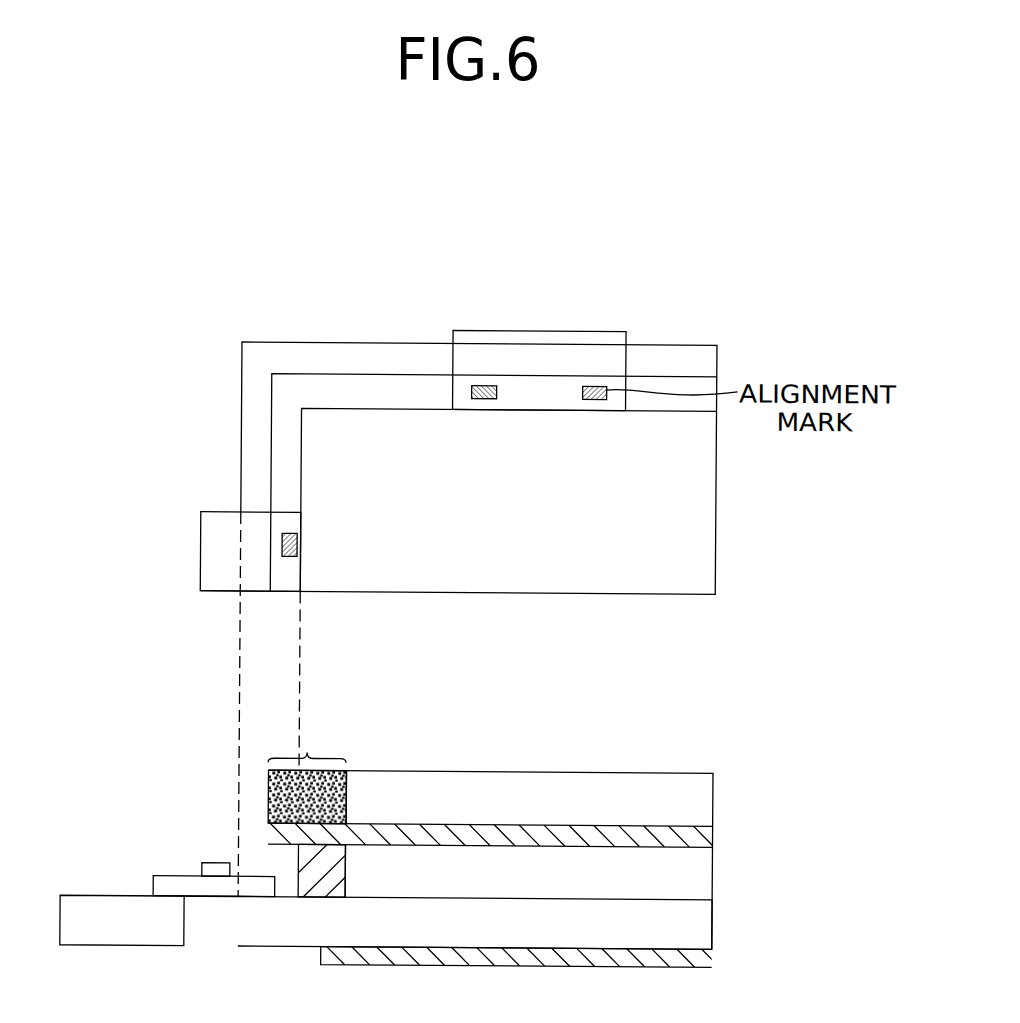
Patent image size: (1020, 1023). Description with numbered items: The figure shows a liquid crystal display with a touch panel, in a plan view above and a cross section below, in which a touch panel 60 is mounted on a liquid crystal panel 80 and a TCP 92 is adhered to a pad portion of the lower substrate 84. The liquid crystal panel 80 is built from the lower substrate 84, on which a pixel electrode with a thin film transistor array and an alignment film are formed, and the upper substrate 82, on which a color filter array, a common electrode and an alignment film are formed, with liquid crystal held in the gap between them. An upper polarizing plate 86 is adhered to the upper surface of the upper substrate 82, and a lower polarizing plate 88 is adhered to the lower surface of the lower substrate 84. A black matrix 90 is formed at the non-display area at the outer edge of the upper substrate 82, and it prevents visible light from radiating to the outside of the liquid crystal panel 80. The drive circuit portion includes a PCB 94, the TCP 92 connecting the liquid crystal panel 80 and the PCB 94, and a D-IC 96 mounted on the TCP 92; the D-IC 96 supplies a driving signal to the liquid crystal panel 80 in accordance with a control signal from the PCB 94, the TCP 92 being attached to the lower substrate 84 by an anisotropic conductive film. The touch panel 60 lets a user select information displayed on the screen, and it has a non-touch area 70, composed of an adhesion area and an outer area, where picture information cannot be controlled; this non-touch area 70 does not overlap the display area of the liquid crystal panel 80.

The touch panel 60 is at (275, 467).
The non-touch area 70 is at (307, 773).
The liquid crystal panel 80 is at (724, 832).
The upper substrate 82 is at (363, 408).
The lower substrate 84 is at (272, 340).
The upper polarizing plate 86 is at (680, 837).
The lower polarizing plate 88 is at (522, 961).
The black matrix 90 is at (302, 869).
The tape carrier package (TCP) 92 is at (603, 341).
The PCB 94 is at (82, 936).
The driver integrated circuit (D-IC) 96 is at (206, 868).